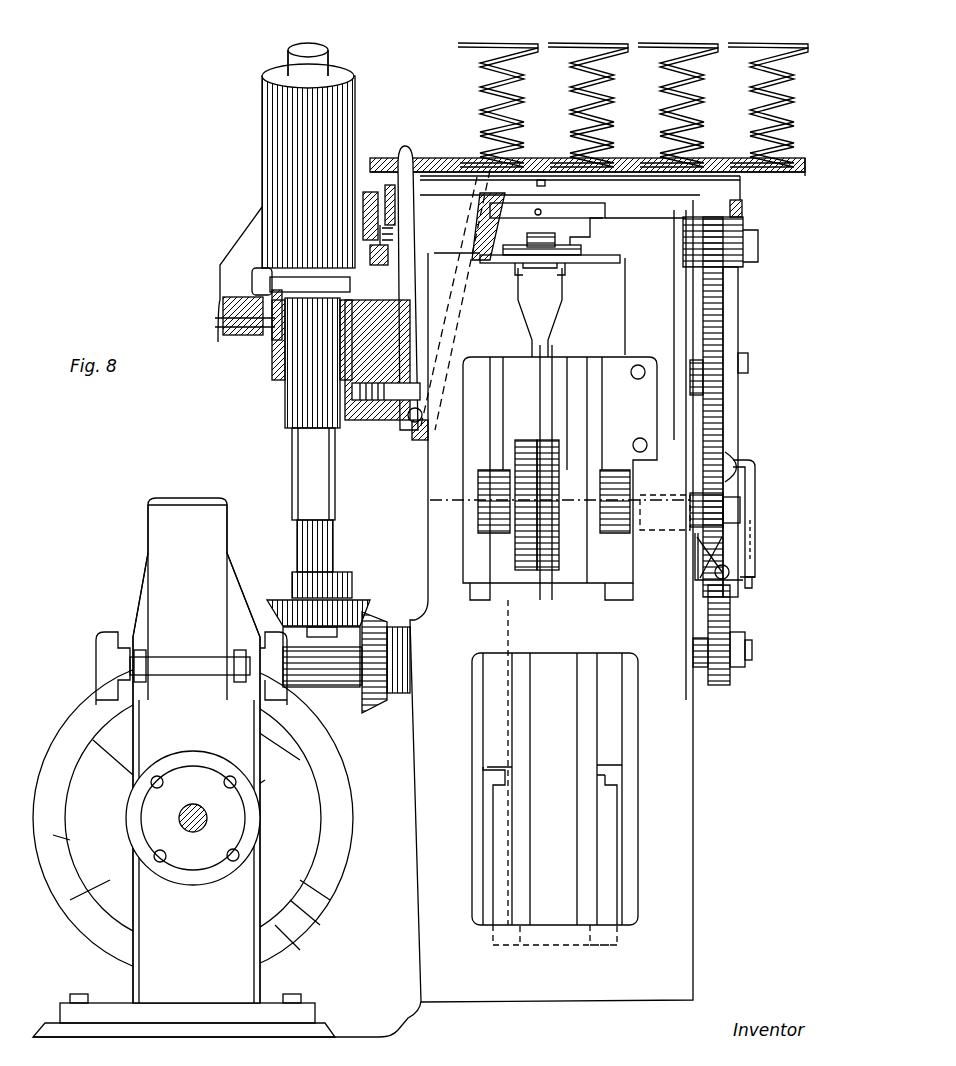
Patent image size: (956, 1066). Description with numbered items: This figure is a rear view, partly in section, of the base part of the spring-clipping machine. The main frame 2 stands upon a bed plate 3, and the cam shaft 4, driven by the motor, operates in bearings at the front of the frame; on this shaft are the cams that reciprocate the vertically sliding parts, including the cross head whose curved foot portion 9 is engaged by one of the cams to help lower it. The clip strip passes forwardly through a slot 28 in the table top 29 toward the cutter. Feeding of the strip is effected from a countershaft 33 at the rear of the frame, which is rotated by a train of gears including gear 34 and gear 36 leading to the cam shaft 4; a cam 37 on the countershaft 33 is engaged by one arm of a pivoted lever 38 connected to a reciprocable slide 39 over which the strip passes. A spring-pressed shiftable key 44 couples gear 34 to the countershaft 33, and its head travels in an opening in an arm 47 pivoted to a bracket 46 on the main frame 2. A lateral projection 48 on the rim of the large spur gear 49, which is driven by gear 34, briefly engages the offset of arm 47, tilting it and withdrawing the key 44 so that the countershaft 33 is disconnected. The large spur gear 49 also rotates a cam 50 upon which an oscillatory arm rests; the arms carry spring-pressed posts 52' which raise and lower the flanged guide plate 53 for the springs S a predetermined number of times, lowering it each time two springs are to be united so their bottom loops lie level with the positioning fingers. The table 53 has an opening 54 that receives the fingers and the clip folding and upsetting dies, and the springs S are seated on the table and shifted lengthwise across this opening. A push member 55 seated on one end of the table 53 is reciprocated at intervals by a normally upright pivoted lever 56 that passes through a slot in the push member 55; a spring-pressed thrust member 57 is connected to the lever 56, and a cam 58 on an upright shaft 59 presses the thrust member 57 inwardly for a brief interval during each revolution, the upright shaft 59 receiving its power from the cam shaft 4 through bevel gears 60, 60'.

The main frame 2 is at (693, 738).
The bed plate 3 is at (373, 1030).
The cam shaft 4 is at (337, 687).
The curved foot portion 9 is at (555, 772).
The slot 28 is at (545, 210).
The table top 29 is at (652, 200).
The countershaft 33 is at (670, 500).
The gear 34 is at (728, 568).
The gear 36 is at (730, 625).
The cam 37 is at (555, 575).
The pivoted lever 38 is at (530, 575).
The reciprocable slide 39 is at (560, 270).
The shiftable key 44 is at (740, 505).
The bracket 46 is at (695, 568).
The arm 47 is at (755, 482).
The lateral projection 48 is at (740, 450).
The large spur gear 49 is at (723, 335).
The cam 50 is at (738, 305).
The spring-pressed posts 52' is at (733, 231).
The flanged guide plate 53 is at (790, 183).
The opening 54 is at (543, 165).
The push member 55 is at (445, 172).
The pivoted lever 56 is at (412, 242).
The spring-pressed thrust member 57 is at (370, 425).
The cam 58 is at (312, 430).
The upright shaft 59 is at (333, 552).
The bevel gear 60 is at (325, 599).
The bevel gear 60' is at (386, 650).
The springs S is at (618, 95).